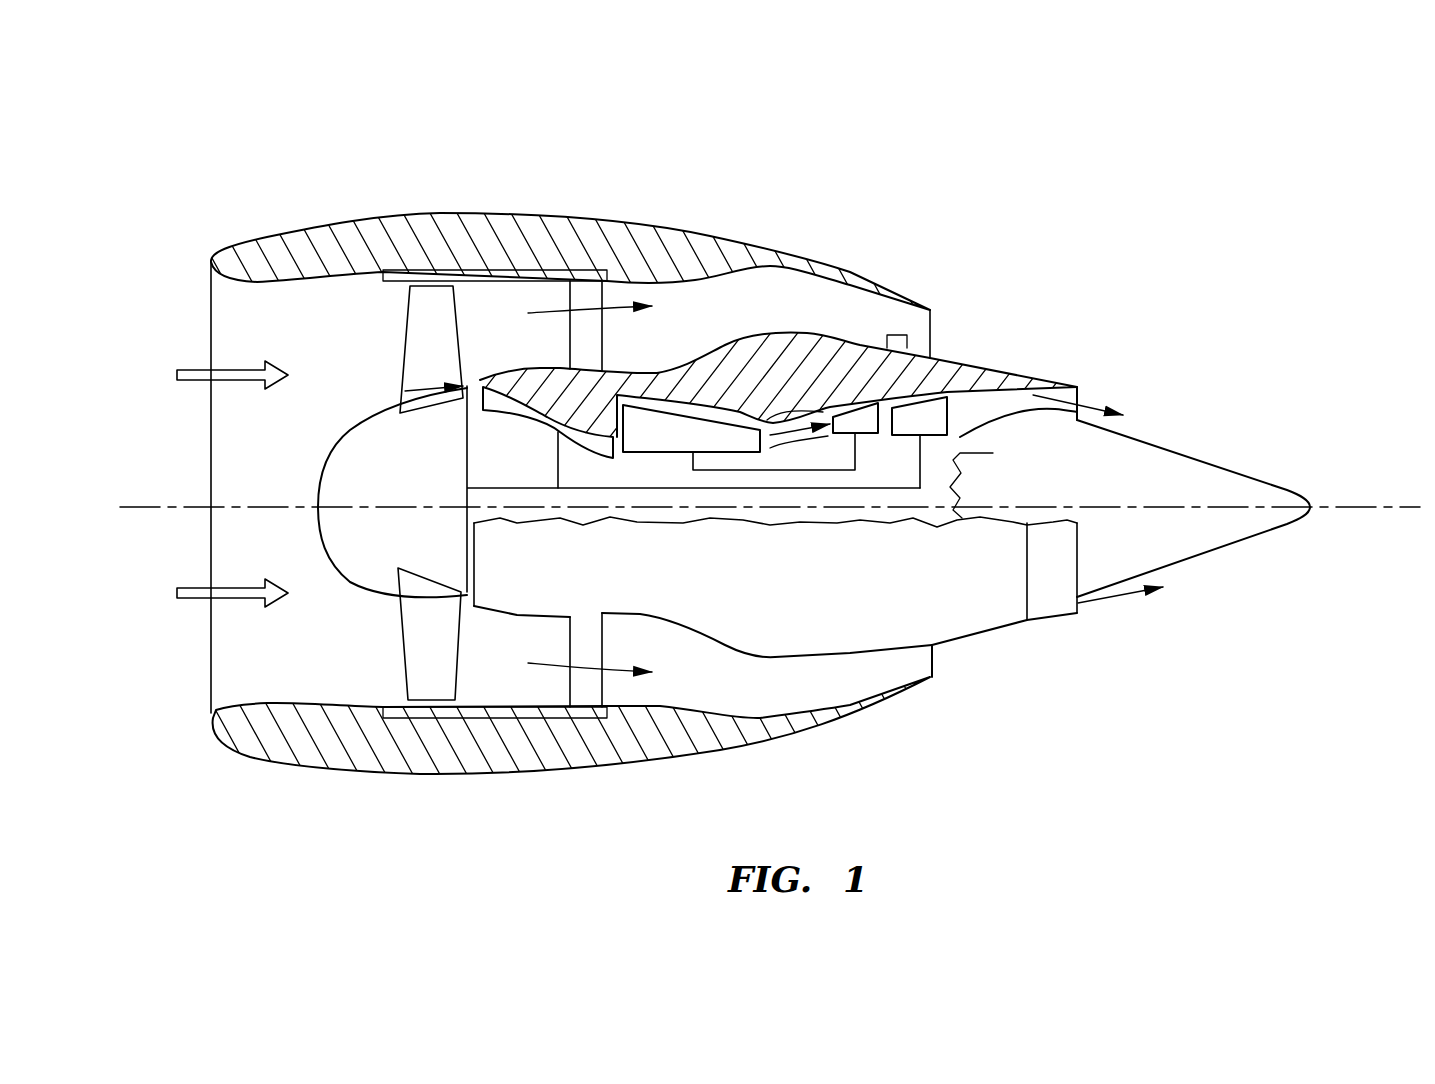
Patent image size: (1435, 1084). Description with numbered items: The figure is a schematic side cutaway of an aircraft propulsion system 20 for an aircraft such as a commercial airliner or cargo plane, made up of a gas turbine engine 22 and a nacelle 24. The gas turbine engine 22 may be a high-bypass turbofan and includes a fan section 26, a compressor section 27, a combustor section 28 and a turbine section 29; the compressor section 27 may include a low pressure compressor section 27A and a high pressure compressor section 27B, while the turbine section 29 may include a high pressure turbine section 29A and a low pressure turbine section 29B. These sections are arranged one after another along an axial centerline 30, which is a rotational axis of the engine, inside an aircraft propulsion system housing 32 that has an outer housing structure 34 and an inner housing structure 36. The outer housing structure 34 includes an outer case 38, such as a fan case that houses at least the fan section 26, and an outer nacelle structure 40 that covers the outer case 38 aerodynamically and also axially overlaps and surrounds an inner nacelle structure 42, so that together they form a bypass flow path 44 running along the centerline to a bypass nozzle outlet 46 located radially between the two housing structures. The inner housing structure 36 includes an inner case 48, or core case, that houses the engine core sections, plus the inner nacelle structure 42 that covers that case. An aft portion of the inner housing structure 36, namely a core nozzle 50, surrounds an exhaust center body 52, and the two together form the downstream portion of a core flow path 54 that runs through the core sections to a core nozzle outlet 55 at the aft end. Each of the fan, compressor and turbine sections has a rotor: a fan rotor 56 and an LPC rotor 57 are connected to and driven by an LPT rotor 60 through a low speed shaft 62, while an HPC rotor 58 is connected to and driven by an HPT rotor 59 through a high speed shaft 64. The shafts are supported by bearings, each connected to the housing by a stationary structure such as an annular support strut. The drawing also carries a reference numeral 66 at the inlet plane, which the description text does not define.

The aircraft propulsion system 20 is at (254, 182).
The gas turbine engine 22 is at (314, 443).
The nacelle 24 is at (550, 217).
The fan section 26 is at (376, 682).
The compressor section 27 is at (753, 552).
The low pressure compressor section 27A is at (533, 382).
The high pressure compressor section 27B is at (757, 425).
The combustor section 28 is at (802, 455).
The turbine section 29 is at (815, 577).
The high pressure turbine section 29A is at (862, 389).
The low pressure turbine section 29B is at (930, 385).
The axial centerline 30 is at (1397, 509).
The aircraft propulsion system housing 32 is at (558, 759).
The outer housing structure 34 is at (488, 786).
The inner housing structure 36 is at (840, 662).
The outer case 38 is at (408, 268).
The outer nacelle structure 40 is at (442, 213).
The inner nacelle structure 42 is at (810, 335).
The bypass flow path 44 is at (633, 351).
The bypass nozzle outlet 46 is at (934, 662).
The inner case 48 is at (763, 320).
The core nozzle 50 is at (1053, 613).
The exhaust center body 52 is at (1180, 560).
The core flow path 54 is at (953, 420).
The core nozzle outlet 55 is at (1080, 393).
The fan rotor 56 is at (387, 567).
The LPC rotor 57 is at (518, 414).
The HPC rotor 58 is at (645, 453).
The HPT rotor 59 is at (920, 438).
The LPT rotor 60 is at (1013, 463).
The low speed shaft 62 is at (867, 438).
The high speed shaft 64 is at (728, 470).
The inlet plane 66 is at (211, 315).